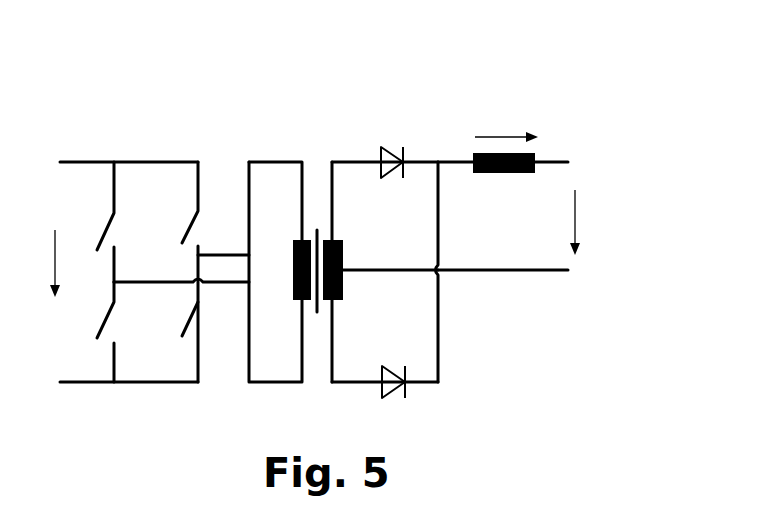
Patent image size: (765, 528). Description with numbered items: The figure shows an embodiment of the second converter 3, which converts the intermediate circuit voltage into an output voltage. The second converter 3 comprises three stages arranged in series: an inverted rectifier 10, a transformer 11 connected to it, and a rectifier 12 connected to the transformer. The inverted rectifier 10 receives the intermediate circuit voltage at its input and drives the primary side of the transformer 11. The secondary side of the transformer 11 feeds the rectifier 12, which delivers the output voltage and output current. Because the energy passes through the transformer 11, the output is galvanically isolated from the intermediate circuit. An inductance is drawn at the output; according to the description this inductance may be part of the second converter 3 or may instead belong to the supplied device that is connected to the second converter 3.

The second converter 3 is at (568, 78).
The inverted rectifier 10 is at (210, 132).
The transformer 11 is at (348, 132).
The rectifier 12 is at (422, 132).